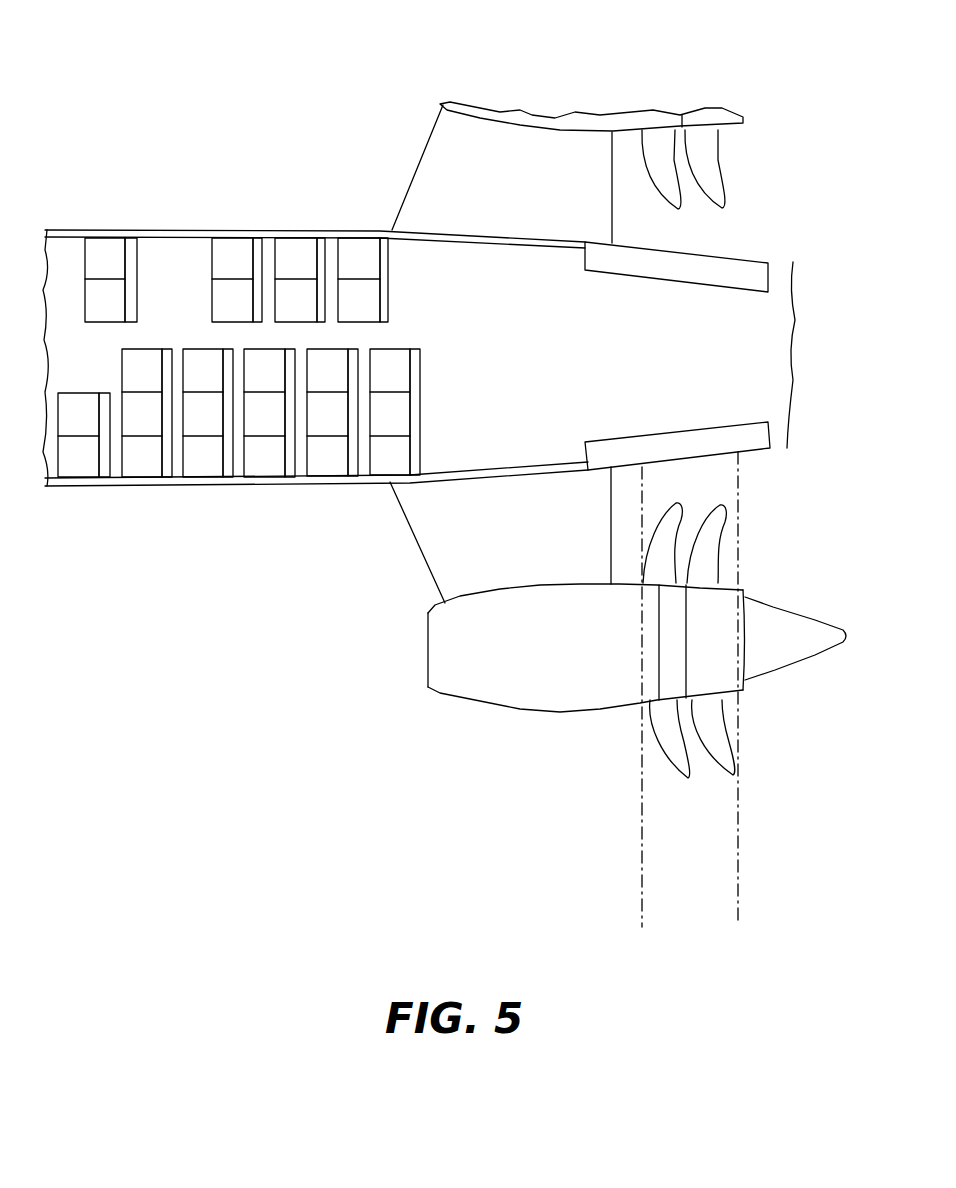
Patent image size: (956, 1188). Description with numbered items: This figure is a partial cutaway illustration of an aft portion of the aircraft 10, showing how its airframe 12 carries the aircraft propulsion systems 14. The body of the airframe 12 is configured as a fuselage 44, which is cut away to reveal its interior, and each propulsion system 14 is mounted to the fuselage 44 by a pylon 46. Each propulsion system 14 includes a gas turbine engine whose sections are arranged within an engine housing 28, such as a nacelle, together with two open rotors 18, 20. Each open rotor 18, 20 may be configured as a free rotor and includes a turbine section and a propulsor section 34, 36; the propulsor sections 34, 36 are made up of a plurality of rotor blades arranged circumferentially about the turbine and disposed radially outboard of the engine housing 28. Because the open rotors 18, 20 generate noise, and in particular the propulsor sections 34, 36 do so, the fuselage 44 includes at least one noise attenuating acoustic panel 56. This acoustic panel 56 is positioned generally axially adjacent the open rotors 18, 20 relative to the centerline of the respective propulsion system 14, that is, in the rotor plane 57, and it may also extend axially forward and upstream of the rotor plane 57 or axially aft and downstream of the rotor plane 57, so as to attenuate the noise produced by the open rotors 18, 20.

The aircraft 10 is at (147, 82).
The airframe 12 is at (148, 492).
The aircraft propulsion system 14 is at (407, 132).
The open rotor 18 is at (658, 778).
The open rotor 20 is at (733, 783).
The engine housing 28 is at (518, 702).
The propulsor section 34 is at (650, 747).
The propulsor section 36 is at (740, 742).
The fuselage 44 is at (270, 487).
The pylon 46 is at (430, 187).
The noise attenuating acoustic panel 56 is at (753, 275).
The rotor plane 57 is at (705, 922).